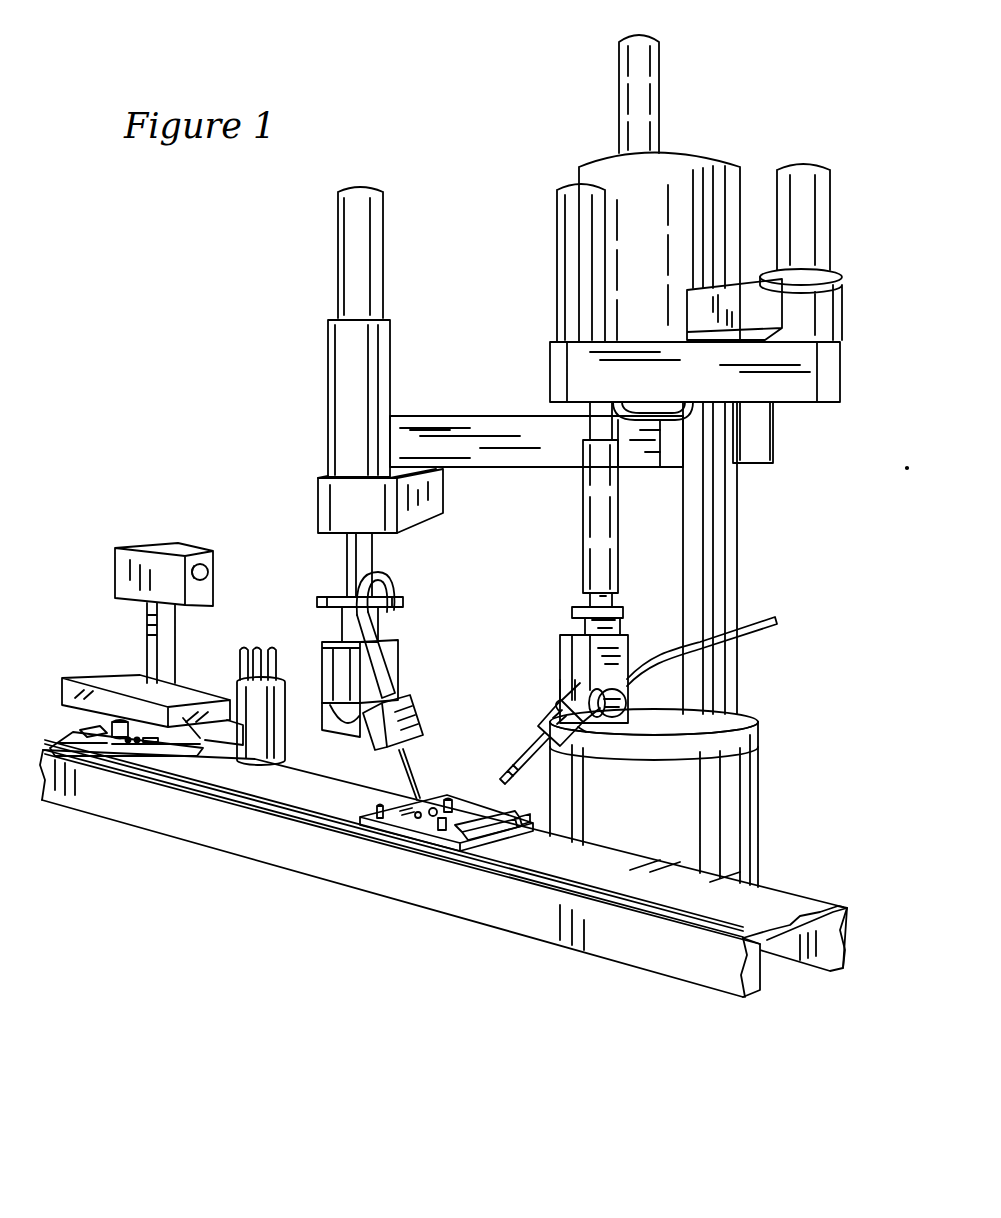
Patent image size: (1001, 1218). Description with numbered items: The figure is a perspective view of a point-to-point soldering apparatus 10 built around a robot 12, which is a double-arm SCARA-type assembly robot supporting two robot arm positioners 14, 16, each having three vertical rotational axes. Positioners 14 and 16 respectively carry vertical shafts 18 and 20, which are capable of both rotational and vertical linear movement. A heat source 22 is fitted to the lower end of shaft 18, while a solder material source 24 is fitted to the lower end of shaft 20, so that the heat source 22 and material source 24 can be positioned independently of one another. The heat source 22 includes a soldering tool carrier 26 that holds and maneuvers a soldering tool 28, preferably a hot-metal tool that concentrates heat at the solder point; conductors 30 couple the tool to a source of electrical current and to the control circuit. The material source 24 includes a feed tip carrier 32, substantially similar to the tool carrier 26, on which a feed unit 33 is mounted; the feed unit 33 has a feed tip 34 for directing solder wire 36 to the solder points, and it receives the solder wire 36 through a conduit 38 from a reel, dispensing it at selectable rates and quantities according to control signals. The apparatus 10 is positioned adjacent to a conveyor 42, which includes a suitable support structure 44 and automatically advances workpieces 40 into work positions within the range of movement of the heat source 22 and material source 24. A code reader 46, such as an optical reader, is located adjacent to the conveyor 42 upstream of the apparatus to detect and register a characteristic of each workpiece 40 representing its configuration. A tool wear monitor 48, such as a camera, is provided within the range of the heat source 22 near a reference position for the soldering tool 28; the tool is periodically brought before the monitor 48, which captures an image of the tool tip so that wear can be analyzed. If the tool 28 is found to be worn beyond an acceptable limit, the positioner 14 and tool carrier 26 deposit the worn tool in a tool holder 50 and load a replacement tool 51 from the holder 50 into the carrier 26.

The point-to-point soldering apparatus 10 is at (232, 444).
The robot 12 is at (684, 176).
The robot arm positioner 14 is at (425, 416).
The robot arm positioner 16 is at (805, 388).
The vertical shaft 18 is at (347, 552).
The vertical shaft 20 is at (578, 605).
The heat source 22 is at (422, 675).
The solder material source 24 is at (551, 696).
The soldering tool carrier 26 is at (400, 647).
The soldering tool 28 is at (417, 770).
The conductors 30 is at (392, 570).
The feed tip carrier 32 is at (629, 681).
The feed unit 33 is at (583, 728).
The feed tip 34 is at (540, 745).
The solder wire 36 is at (500, 777).
The conduit 38 is at (770, 613).
The workpieces 40 is at (116, 740).
The conveyor 42 is at (596, 880).
The support structure 44 is at (660, 965).
The code reader 46 is at (118, 686).
The tool wear monitor 48 is at (120, 548).
The tool holder 50 is at (240, 686).
The replacement tool 51 is at (257, 648).